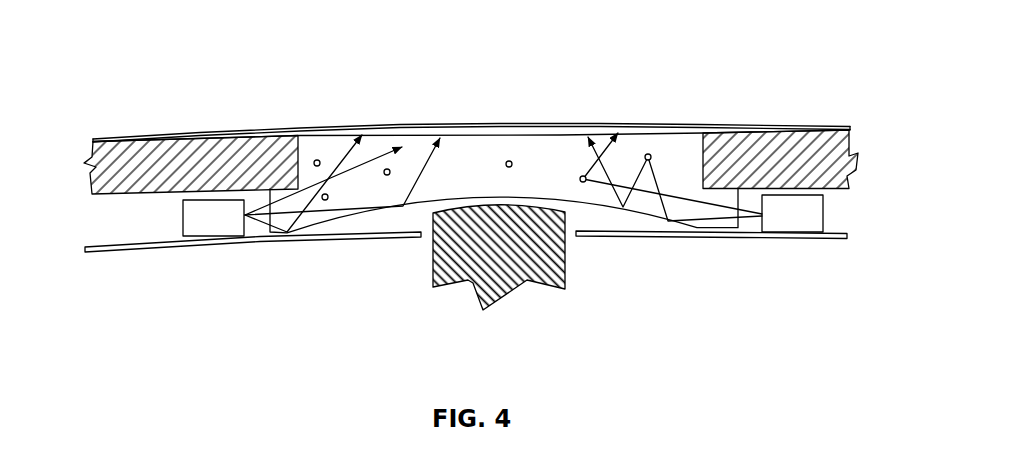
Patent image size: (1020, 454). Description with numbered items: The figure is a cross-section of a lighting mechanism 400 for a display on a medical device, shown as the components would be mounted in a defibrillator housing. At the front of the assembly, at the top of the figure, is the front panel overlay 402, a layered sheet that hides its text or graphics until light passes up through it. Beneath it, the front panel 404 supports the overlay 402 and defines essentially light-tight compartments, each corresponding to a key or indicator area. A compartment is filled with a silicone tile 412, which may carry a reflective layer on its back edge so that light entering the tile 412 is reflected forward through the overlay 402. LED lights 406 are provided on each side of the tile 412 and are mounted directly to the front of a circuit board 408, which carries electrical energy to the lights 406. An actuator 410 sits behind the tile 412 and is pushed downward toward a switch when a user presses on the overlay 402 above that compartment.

The lighting mechanism 400 is at (113, 36).
The front panel overlay 402 is at (173, 133).
The front panel 404 is at (833, 170).
The LED lights 406 is at (824, 212).
The circuit board 408 is at (218, 242).
The actuator 410 is at (483, 309).
The silicone tiles 412 is at (657, 178).